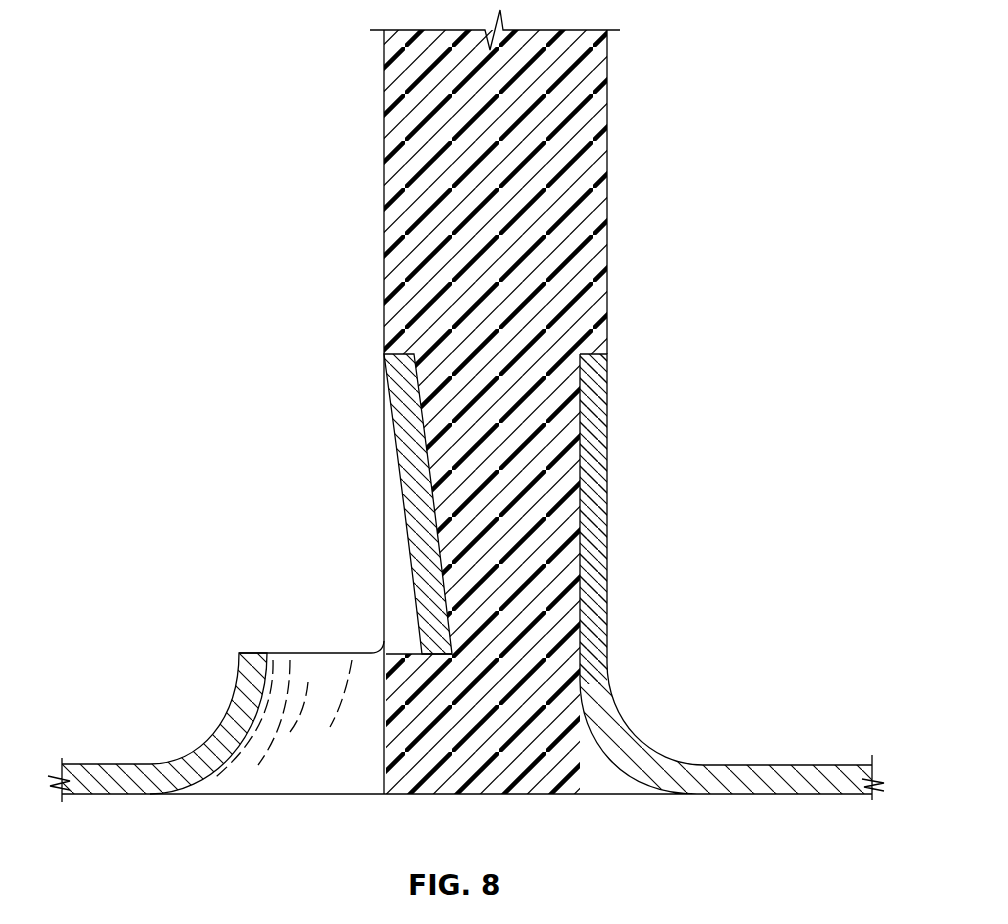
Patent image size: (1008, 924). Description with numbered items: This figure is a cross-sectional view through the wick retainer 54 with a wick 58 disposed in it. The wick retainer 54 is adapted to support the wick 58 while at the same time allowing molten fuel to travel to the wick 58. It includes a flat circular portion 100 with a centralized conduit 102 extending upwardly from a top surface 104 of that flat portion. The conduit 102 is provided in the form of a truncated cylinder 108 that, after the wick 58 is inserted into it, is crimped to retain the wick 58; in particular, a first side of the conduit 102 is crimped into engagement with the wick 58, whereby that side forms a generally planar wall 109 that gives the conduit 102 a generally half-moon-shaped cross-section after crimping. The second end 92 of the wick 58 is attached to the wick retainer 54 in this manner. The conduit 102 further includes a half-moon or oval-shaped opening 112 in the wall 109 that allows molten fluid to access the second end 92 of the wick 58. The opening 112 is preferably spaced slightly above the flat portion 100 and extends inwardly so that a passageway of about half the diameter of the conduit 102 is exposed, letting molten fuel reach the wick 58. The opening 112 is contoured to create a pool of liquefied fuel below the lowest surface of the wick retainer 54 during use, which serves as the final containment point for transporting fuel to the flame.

The wick 58 is at (556, 176).
The second end of the wick 92 is at (557, 775).
The conduit 102 is at (598, 475).
The truncated cylinder 108 is at (595, 413).
The generally planar wall 109 is at (412, 528).
The opening 112 is at (316, 660).
The flat circular portion 100 is at (83, 764).
The top surface 104 is at (152, 763).
The wick retainer 54 is at (693, 765).